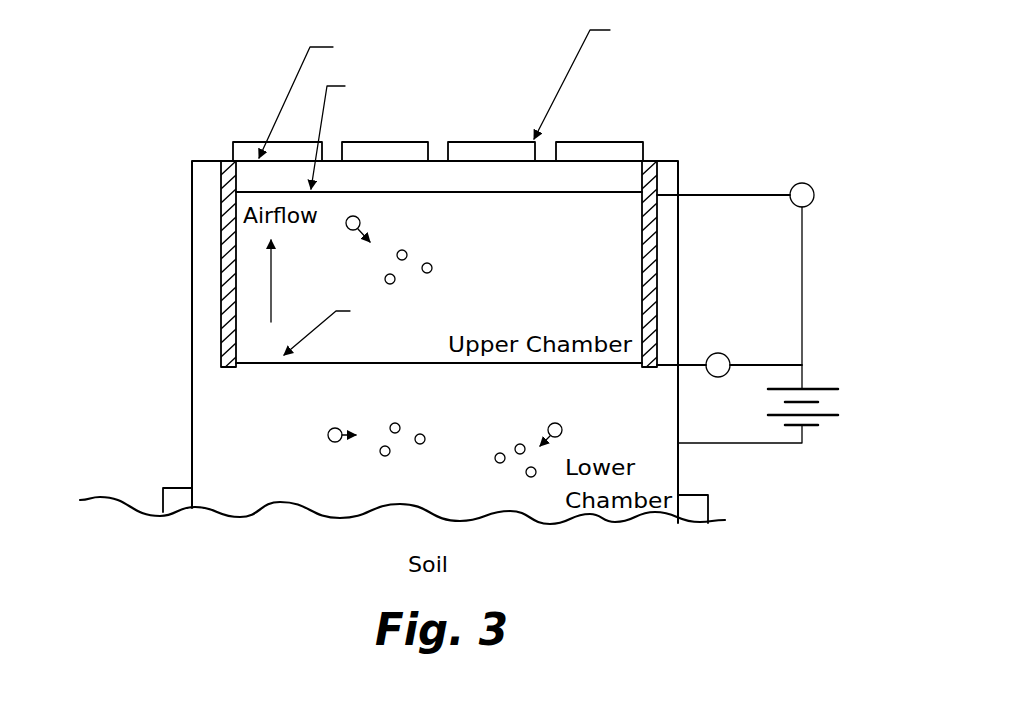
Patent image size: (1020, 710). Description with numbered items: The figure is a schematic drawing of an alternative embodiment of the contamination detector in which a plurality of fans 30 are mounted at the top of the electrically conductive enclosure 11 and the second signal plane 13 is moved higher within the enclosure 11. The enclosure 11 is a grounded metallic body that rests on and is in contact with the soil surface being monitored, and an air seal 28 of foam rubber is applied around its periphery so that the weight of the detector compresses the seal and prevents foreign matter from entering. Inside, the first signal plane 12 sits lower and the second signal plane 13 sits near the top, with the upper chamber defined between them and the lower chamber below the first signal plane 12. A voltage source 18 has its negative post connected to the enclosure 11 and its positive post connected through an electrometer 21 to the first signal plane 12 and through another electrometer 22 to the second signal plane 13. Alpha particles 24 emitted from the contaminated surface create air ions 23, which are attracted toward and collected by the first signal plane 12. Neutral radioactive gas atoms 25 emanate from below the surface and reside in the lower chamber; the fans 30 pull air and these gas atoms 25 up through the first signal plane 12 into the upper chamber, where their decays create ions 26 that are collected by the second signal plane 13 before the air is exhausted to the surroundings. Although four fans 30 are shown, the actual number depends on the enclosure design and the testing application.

The electrically conductive enclosure 11 is at (192, 200).
The first signal plane 12 is at (510, 366).
The second signal plane 13 is at (512, 193).
The voltage source 18 is at (841, 403).
The electrometer 21 is at (726, 354).
The electrometer 22 is at (811, 187).
The air ions 23 is at (424, 444).
The alpha particles 24 is at (328, 437).
The radioactive gas atoms 25 is at (360, 221).
The air ions 26 is at (431, 264).
The air seal 28 is at (185, 488).
The fans 30 is at (607, 142).